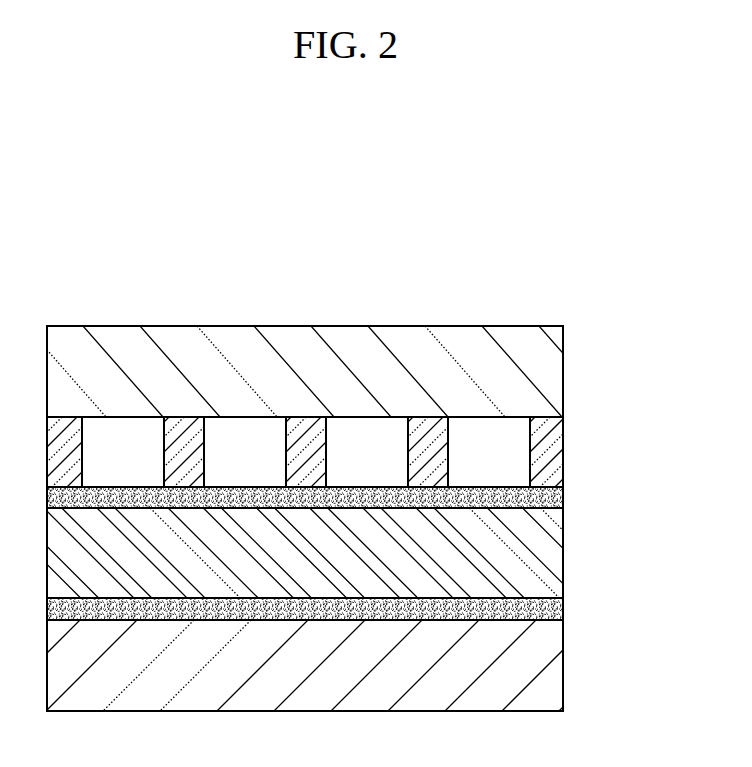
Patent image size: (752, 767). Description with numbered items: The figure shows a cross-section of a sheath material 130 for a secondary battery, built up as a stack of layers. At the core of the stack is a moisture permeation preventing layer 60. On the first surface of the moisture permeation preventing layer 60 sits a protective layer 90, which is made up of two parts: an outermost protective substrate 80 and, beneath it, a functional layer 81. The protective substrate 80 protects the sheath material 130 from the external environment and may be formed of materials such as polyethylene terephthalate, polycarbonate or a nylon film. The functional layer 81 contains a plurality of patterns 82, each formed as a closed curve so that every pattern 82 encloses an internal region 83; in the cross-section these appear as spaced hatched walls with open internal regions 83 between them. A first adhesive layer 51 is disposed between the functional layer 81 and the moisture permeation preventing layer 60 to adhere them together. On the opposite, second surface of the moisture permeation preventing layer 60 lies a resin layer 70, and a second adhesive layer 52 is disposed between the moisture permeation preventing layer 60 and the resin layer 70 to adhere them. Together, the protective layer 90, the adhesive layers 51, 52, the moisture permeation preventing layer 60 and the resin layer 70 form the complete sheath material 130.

The sheath material for a secondary battery 130 is at (326, 237).
The protective layer 90 is at (348, 406).
The protective substrate 80 is at (542, 363).
The functional layer 81 is at (328, 452).
The pattern 82 is at (542, 438).
The internal region 83 is at (503, 456).
The first adhesive layer 51 is at (547, 500).
The moisture permeation preventing layer 60 is at (543, 550).
The second adhesive layer 52 is at (547, 608).
The resin layer 70 is at (543, 665).